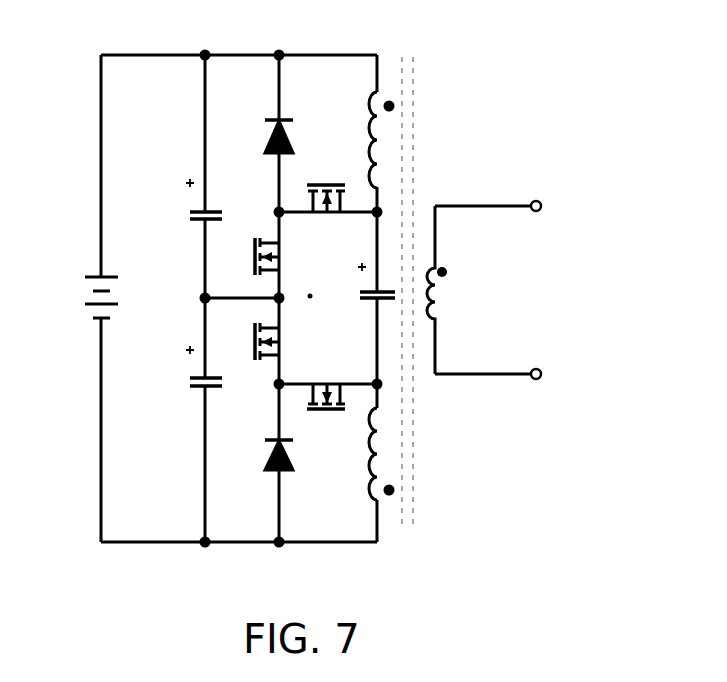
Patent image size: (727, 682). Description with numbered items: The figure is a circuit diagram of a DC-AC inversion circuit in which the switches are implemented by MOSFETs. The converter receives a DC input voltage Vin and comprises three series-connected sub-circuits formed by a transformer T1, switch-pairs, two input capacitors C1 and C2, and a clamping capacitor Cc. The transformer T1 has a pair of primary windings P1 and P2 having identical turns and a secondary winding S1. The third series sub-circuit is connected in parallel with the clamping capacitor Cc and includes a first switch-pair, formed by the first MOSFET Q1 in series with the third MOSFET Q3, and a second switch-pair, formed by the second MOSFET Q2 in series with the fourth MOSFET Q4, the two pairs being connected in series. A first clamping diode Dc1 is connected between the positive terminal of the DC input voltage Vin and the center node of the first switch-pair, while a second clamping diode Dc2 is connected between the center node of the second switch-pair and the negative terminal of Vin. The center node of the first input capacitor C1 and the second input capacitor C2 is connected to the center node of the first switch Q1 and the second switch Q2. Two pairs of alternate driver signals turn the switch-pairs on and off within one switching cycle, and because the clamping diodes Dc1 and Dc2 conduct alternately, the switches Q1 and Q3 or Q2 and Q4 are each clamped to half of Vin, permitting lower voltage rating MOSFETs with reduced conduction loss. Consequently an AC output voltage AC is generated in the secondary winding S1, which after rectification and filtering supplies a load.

The DC input voltage Vin is at (83, 277).
The first input capacitor C1 is at (182, 207).
The second input capacitor C2 is at (182, 372).
The first clamping diode Dc1 is at (251, 136).
The second clamping diode Dc2 is at (251, 456).
The first MOSFET Q1 is at (248, 258).
The second MOSFET Q2 is at (248, 342).
The third MOSFET Q3 is at (326, 218).
The fourth MOSFET Q4 is at (326, 380).
The clamping capacitor Cc is at (352, 287).
The first primary winding P1 is at (362, 140).
The second primary winding P2 is at (362, 454).
The transformer T1 is at (402, 274).
The secondary winding S1 is at (452, 290).
The AC output voltage AC is at (494, 290).